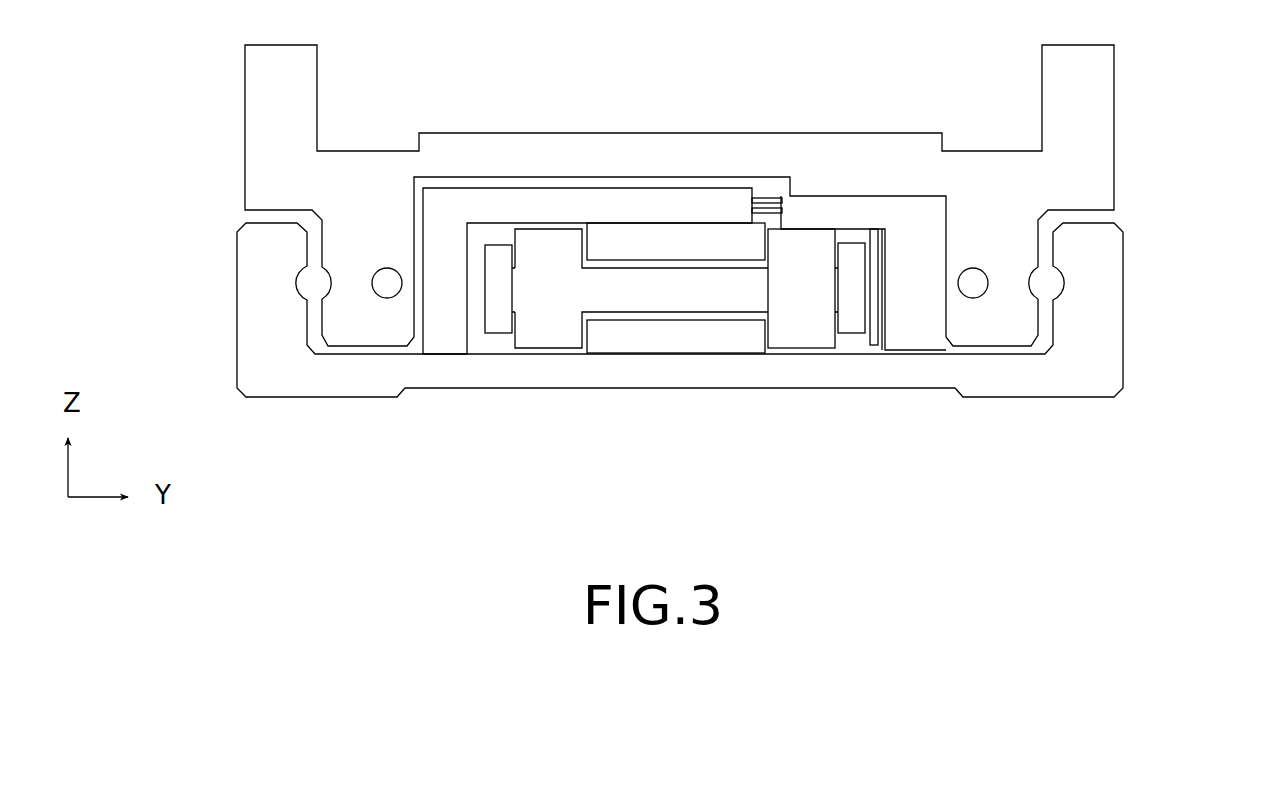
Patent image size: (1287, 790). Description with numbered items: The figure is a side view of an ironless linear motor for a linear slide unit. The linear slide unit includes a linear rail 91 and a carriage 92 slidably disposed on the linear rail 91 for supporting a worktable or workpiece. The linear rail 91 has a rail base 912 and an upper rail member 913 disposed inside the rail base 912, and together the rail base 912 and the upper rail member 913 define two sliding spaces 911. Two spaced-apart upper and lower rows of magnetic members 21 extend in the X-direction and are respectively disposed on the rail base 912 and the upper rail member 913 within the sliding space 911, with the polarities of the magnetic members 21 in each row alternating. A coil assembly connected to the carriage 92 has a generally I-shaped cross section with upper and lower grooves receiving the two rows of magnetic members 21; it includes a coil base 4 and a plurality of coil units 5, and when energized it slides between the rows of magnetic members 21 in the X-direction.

The carriage 92 is at (1115, 126).
The linear rail 91 is at (1117, 401).
The sliding space 911 is at (1043, 256).
The rail base 912 is at (322, 392).
The upper rail member 913 is at (545, 210).
The magnetic member 21 is at (680, 240).
The coil unit 5 is at (803, 353).
The coil base 4 is at (877, 353).